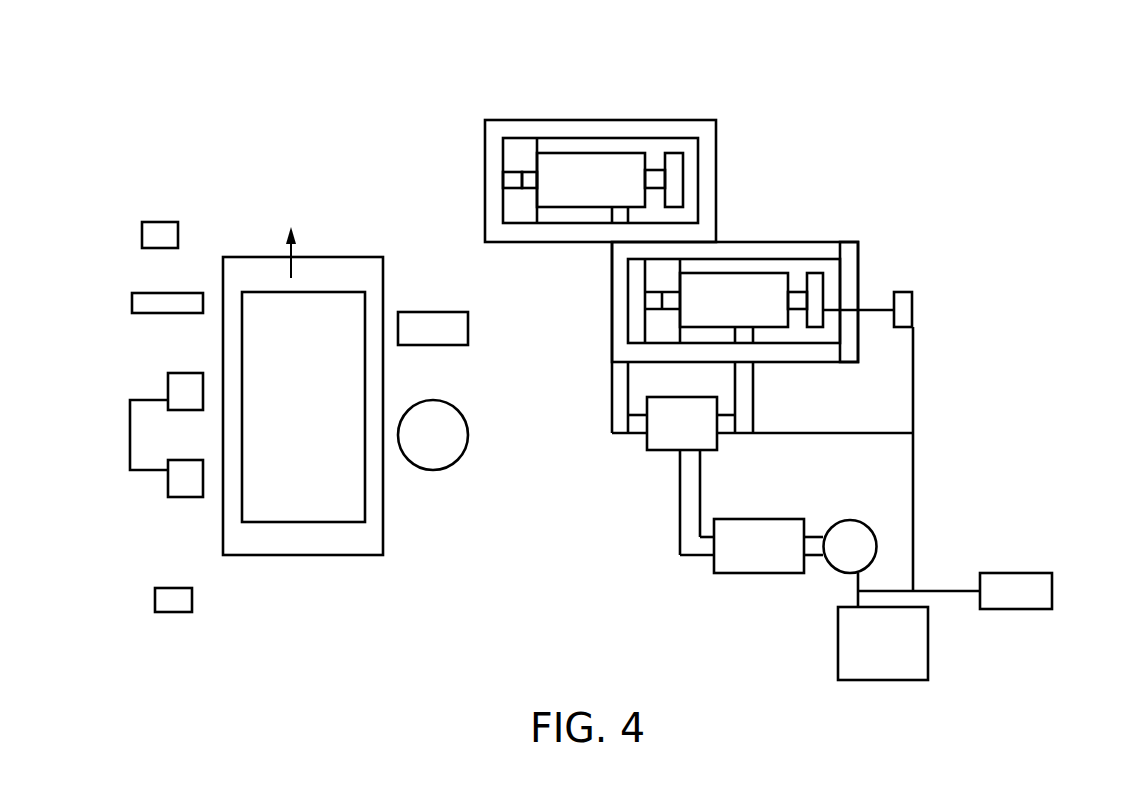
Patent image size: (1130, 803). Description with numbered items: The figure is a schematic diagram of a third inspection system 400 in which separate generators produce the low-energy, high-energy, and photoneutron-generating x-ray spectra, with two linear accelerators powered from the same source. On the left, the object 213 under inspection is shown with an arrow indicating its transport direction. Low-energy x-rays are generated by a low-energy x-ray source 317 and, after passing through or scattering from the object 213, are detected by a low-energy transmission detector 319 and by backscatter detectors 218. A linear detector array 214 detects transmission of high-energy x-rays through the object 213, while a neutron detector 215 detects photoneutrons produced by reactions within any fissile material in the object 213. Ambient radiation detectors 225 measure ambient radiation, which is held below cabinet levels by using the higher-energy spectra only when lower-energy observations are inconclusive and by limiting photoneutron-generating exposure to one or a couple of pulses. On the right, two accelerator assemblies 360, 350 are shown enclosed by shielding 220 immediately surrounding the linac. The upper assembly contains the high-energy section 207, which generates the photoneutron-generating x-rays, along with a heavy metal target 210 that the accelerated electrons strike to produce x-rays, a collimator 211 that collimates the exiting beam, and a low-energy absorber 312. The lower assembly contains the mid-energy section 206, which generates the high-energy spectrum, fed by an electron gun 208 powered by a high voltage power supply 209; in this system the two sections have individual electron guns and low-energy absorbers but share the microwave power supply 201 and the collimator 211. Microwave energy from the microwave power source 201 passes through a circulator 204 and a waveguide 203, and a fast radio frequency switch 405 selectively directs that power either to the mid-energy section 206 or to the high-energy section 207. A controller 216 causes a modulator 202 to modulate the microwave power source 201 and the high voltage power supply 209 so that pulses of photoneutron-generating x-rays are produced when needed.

The third inspection system 400 is at (895, 82).
The object 213 is at (310, 523).
The ambient radiation detectors 225 is at (140, 230).
The linear detector array 214 is at (135, 292).
The neutron detector 215 is at (425, 312).
The low-energy x-ray source 317 is at (130, 440).
The backscatter detectors 218 is at (178, 498).
The low-energy transmission detector 319 is at (443, 470).
The upper housing 360 is at (570, 143).
The low-energy absorber 312 is at (493, 202).
The heavy metal target 210 is at (521, 185).
The collimator 211 is at (525, 162).
The high-energy section 207 is at (587, 152).
The lower housing 350 is at (784, 265).
The mid-energy section 206 is at (731, 273).
The electron gun 208 is at (813, 272).
The shielding 220 is at (820, 342).
The high voltage power supply 209 is at (914, 296).
The waveguide 203 is at (610, 385).
The fast radio frequency switch 405 is at (715, 450).
The circulator 204 is at (740, 577).
The microwave power source 201 is at (845, 520).
The modulator 202 is at (928, 668).
The controller 216 is at (1050, 573).